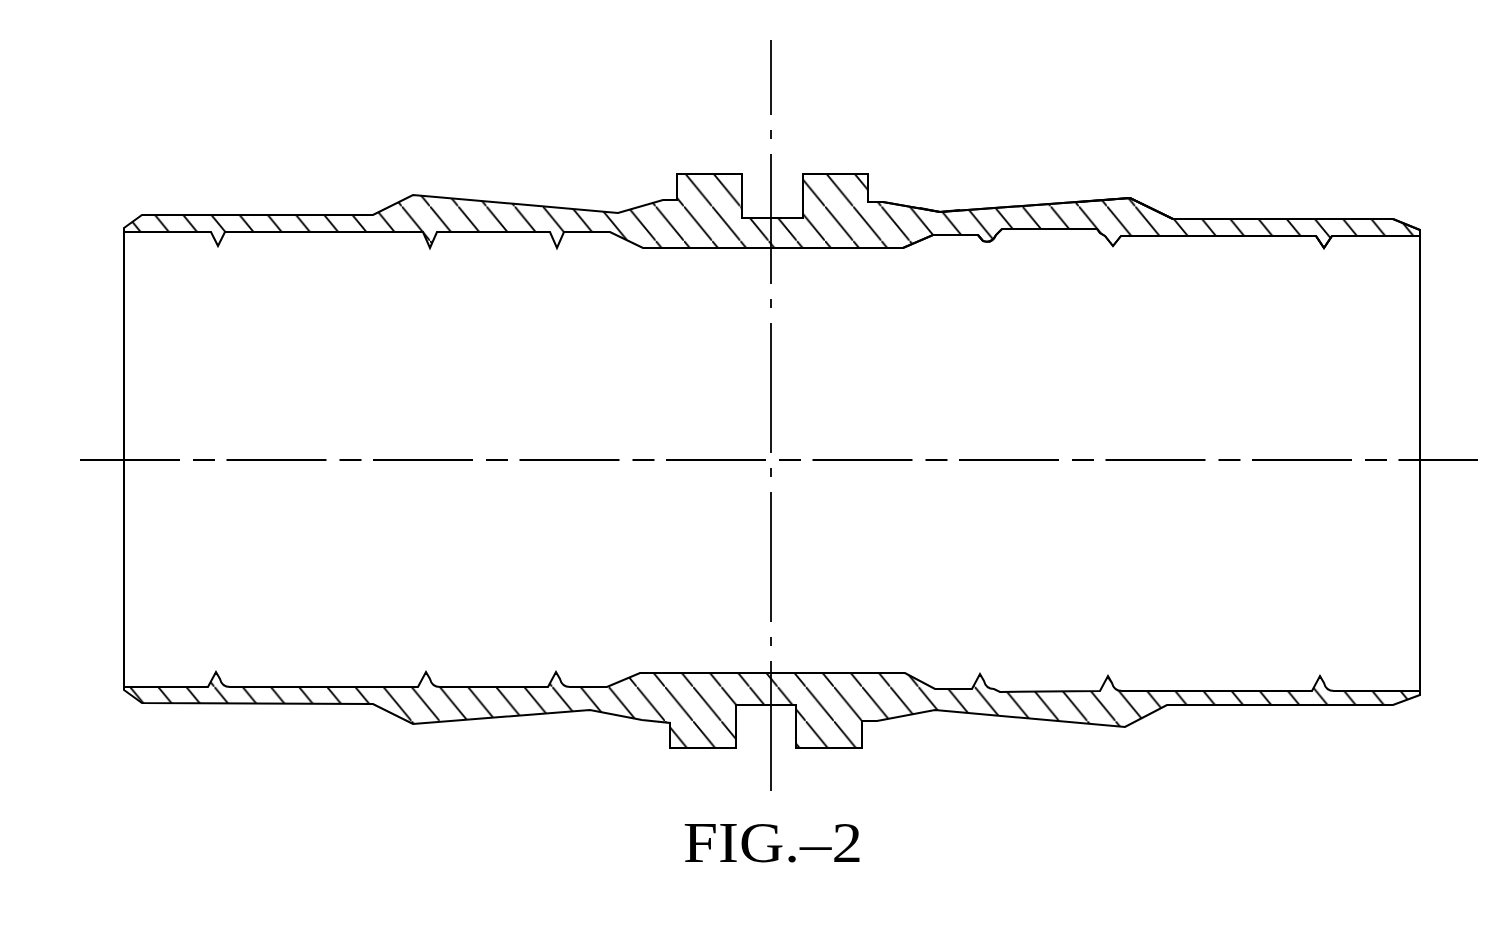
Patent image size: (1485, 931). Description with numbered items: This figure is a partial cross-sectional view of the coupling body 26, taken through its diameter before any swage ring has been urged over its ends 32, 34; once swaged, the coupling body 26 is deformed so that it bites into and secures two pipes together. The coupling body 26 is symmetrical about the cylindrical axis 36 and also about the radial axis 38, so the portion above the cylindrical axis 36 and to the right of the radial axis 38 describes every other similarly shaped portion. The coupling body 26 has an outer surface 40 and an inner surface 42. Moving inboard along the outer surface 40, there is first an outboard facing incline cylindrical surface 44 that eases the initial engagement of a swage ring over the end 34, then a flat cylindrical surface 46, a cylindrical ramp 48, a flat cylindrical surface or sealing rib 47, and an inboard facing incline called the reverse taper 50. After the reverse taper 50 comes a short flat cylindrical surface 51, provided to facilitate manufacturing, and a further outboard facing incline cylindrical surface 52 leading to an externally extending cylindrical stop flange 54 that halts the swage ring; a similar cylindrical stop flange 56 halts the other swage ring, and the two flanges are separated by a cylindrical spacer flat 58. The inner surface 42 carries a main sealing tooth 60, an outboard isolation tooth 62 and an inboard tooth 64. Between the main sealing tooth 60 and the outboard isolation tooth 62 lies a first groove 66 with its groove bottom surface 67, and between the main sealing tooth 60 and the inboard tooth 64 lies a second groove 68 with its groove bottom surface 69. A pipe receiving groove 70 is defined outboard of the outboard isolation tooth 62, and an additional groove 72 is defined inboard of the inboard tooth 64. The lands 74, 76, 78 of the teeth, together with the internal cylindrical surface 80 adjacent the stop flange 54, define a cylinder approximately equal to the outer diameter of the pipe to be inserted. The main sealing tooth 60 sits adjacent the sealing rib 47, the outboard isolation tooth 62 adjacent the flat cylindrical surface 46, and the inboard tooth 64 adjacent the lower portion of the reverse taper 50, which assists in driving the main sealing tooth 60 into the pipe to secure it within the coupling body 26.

The coupling body 26 is at (1339, 130).
The end 32 is at (124, 228).
The end 34 is at (1420, 230).
The cylindrical axis 36 is at (588, 462).
The radial axis 38 is at (773, 56).
The outer surface 40 is at (1212, 218).
The inner surface 42 is at (1192, 324).
The outboard facing incline cylindrical surface 44 is at (1405, 223).
The flat cylindrical surface 46 is at (1250, 218).
The sealing rib 47 is at (1107, 200).
The cylindrical ramp 48 is at (1157, 212).
The reverse taper 50 is at (1025, 205).
The short flat cylindrical surface 51 is at (937, 212).
The outboard facing incline cylindrical surface 52 is at (897, 208).
The cylindrical stop flange 54 is at (845, 174).
The cylindrical stop flange 56 is at (697, 174).
The cylindrical spacer flat 58 is at (758, 217).
The main sealing tooth 60 is at (1100, 240).
The outboard isolation tooth 62 is at (1333, 250).
The inboard tooth 64 is at (1000, 245).
The first groove 66 is at (1284, 237).
The groove bottom surface 67 is at (1250, 237).
The second groove 68 is at (1060, 232).
The groove bottom surface 69 is at (1023, 232).
The pipe receiving groove 70 is at (1372, 237).
The additional groove 72 is at (946, 240).
The land 74 is at (1115, 238).
The land 76 is at (1325, 250).
The land 78 is at (983, 240).
The internal cylindrical surface 80 is at (853, 250).